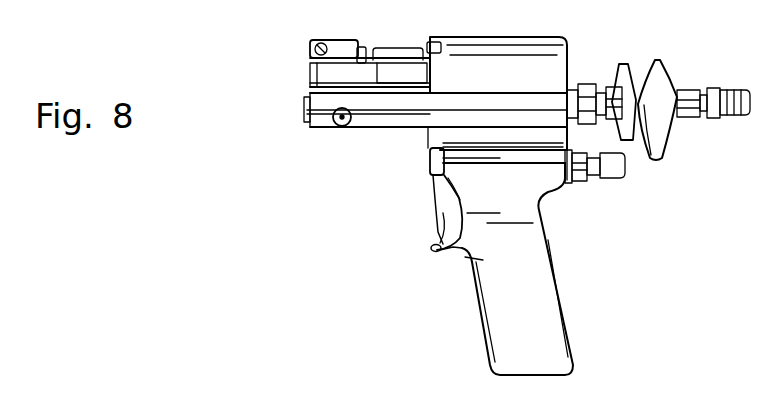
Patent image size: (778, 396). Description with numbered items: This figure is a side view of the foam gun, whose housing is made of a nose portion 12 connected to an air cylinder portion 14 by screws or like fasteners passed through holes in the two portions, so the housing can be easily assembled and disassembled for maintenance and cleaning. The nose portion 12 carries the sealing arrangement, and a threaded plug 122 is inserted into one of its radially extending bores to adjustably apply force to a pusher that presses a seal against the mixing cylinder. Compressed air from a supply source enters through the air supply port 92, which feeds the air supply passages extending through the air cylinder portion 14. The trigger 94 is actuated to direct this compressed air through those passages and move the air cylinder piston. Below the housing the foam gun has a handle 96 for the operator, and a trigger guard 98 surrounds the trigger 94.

The air cylinder portion 14 is at (558, 73).
The nose portion 12 is at (322, 127).
The threaded plug 122 is at (342, 127).
The trigger guard 98 is at (426, 137).
The trigger 94 is at (437, 256).
The handle 96 is at (543, 287).
The air supply port 92 is at (626, 168).